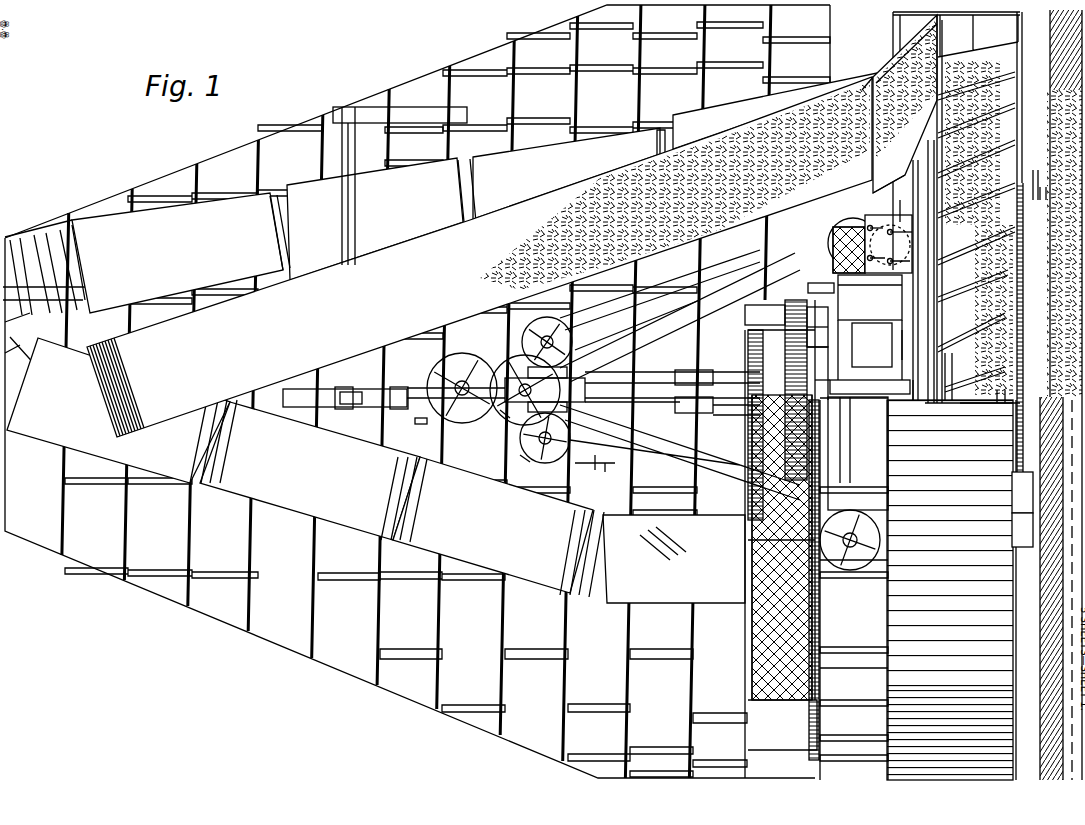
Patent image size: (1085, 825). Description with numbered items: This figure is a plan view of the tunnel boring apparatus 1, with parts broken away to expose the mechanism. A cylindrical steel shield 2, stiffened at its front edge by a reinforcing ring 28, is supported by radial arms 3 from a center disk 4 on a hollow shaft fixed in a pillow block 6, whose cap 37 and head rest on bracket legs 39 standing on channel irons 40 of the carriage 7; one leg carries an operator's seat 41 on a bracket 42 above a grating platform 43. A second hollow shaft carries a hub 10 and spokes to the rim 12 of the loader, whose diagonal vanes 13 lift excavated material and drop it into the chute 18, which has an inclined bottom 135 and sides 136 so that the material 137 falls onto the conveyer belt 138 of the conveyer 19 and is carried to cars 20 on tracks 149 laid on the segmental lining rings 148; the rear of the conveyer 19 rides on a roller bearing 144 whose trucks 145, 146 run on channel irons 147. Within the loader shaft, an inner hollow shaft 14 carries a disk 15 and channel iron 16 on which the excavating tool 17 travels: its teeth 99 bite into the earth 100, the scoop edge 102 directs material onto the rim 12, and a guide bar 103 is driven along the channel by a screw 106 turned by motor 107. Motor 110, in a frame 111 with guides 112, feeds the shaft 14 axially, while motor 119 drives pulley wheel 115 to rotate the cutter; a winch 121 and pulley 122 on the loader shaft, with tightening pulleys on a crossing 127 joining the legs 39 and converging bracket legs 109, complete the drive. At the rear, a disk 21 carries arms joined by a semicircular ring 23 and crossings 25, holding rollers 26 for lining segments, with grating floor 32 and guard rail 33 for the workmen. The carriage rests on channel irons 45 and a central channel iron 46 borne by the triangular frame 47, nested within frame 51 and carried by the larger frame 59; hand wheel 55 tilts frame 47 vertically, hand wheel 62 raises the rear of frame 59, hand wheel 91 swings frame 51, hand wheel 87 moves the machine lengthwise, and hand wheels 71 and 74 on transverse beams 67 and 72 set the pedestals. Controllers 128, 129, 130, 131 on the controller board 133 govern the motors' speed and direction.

The boring apparatus 1 is at (880, 612).
The shield 2 is at (948, 396).
The radial arms 3 is at (894, 244).
The center disk 4 is at (923, 389).
The pillow block 6 is at (858, 453).
The carriage 7 is at (524, 388).
The hub 10 is at (942, 389).
The rim 12 is at (978, 154).
The vanes 13 is at (966, 209).
The hollow shaft 14 is at (986, 410).
The disk 15 is at (993, 410).
The channel iron 16 is at (1013, 413).
The excavating tool 17 is at (1035, 188).
The chute 18 is at (905, 104).
The conveyer 19 is at (479, 257).
The cars 20 is at (442, 338).
The disk 21 is at (821, 386).
The semicircular ring 23 is at (858, 612).
The crossings 25 is at (862, 538).
The rollers 26 is at (854, 581).
The reinforcing ring 28 is at (1028, 97).
The floor 32 is at (748, 535).
The guard rail 33 is at (748, 549).
The cap 37 is at (870, 406).
The bracket legs 39 is at (870, 391).
The channel irons 40 is at (821, 291).
The seat 41 is at (870, 297).
The bracket 42 is at (900, 345).
The platform 43 is at (853, 282).
The channel irons 45 is at (765, 315).
The channel iron 46 is at (672, 385).
The triangular frame 47 is at (623, 335).
The triangular frame 51 is at (637, 331).
The hand wheel 55 is at (498, 421).
The triangular frame 59 is at (680, 452).
The hand wheel 62 is at (461, 387).
The beam 67 is at (521, 463).
The hand wheels 71 is at (546, 393).
The beam 72 is at (848, 238).
The hand wheels 74 is at (822, 247).
The hand wheel 87 is at (419, 415).
The hand wheel 91 is at (595, 471).
The teeth 99 is at (1037, 178).
The earth 100 is at (1053, 395).
The edge 102 is at (1036, 286).
The guide bar 103 is at (1036, 306).
The screw 106 is at (1044, 481).
The motor 107 is at (1022, 509).
The bracket legs 109 is at (712, 427).
The motor 110 is at (547, 373).
The frame 111 is at (496, 395).
The guides 112 is at (632, 394).
The pulley wheel 115 is at (766, 425).
The motor 119 is at (694, 391).
The winch 121 is at (787, 390).
The pulley 122 is at (817, 327).
The crossing 127 is at (818, 366).
The controller 128 is at (898, 205).
The controller 129 is at (894, 219).
The controller 130 is at (890, 245).
The controller 131 is at (889, 265).
The controller board 133 is at (867, 217).
The bottom 135 is at (918, 104).
The sides 136 is at (883, 121).
The material 137 is at (832, 186).
The conveyer belt 138 is at (675, 186).
The roller bearing 144 is at (365, 165).
The truck 145 is at (355, 135).
The truck 146 is at (358, 387).
The channel irons 147 is at (470, 118).
The segmental lining rings 148 is at (606, 110).
The tracks 149 is at (28, 340).